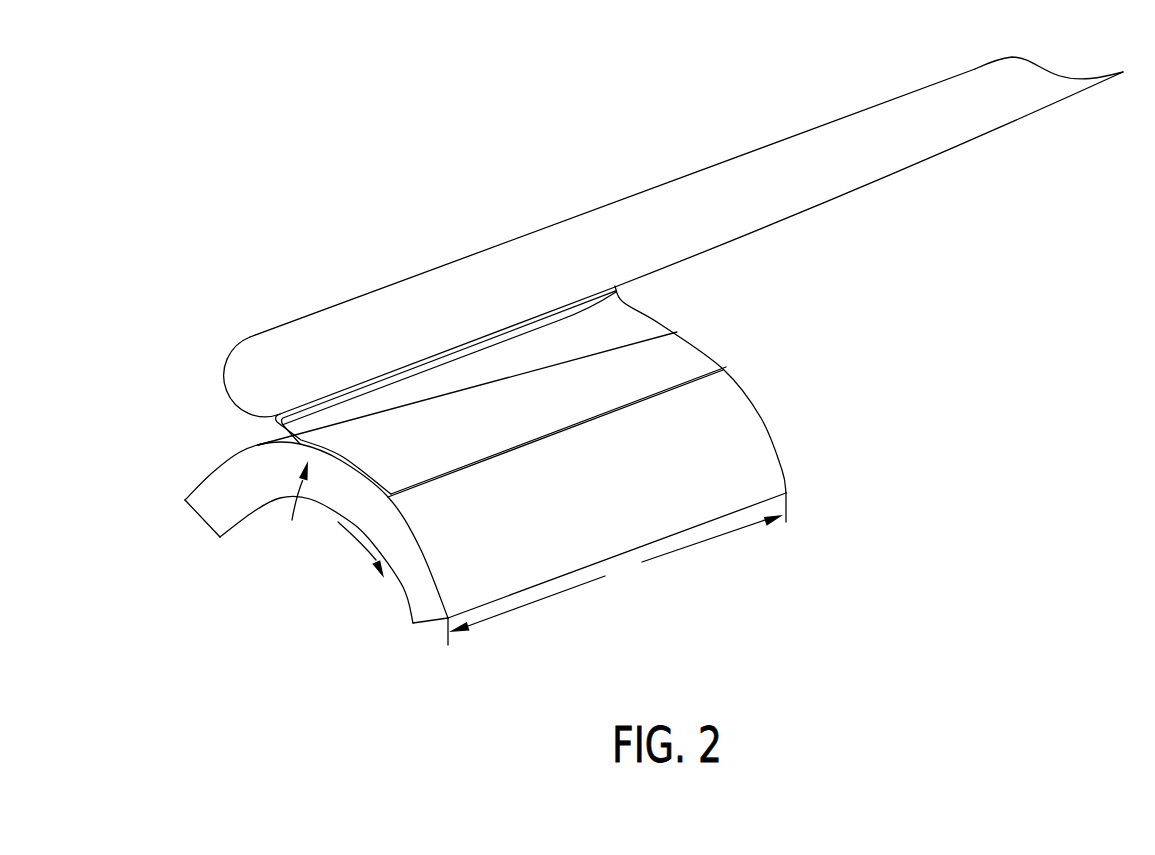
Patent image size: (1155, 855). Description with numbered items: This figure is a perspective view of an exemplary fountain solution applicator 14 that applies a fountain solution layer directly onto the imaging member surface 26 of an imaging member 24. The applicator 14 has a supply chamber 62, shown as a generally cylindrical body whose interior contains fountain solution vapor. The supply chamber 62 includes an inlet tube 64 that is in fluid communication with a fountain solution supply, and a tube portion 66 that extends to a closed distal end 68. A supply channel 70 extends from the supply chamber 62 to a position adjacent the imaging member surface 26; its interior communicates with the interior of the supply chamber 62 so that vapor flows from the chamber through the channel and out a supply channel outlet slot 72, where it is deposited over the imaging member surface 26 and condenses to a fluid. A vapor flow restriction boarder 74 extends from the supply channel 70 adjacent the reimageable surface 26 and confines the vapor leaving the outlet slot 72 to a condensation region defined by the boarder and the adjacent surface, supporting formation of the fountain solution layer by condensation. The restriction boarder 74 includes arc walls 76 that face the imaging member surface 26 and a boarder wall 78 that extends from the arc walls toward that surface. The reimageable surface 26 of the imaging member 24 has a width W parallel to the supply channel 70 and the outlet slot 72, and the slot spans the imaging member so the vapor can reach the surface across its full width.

The fountain solution applicator 14 is at (356, 224).
The imaging member 24 is at (430, 622).
The imaging member surface 26 is at (758, 455).
The supply chamber 62 is at (703, 168).
The inlet tube 64 is at (1083, 93).
The tube portion 66 is at (530, 232).
The closed distal end 68 is at (237, 377).
The supply channel 70 is at (276, 421).
The supply channel outlet slot 72 is at (332, 519).
The vapor flow restriction boarder 74 is at (678, 331).
The arc walls 76 is at (724, 362).
The boarder wall 78 is at (260, 445).